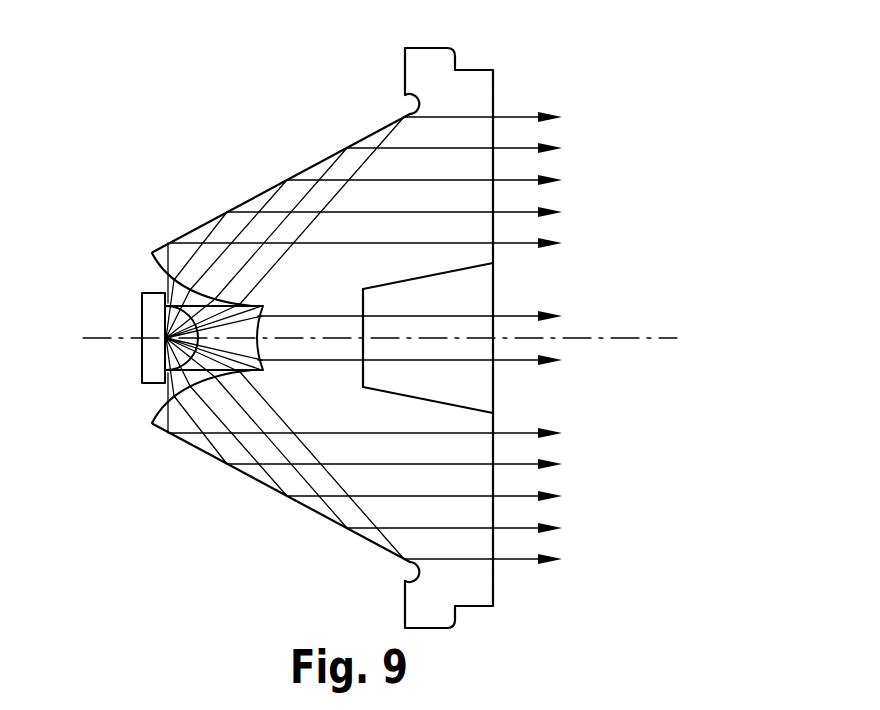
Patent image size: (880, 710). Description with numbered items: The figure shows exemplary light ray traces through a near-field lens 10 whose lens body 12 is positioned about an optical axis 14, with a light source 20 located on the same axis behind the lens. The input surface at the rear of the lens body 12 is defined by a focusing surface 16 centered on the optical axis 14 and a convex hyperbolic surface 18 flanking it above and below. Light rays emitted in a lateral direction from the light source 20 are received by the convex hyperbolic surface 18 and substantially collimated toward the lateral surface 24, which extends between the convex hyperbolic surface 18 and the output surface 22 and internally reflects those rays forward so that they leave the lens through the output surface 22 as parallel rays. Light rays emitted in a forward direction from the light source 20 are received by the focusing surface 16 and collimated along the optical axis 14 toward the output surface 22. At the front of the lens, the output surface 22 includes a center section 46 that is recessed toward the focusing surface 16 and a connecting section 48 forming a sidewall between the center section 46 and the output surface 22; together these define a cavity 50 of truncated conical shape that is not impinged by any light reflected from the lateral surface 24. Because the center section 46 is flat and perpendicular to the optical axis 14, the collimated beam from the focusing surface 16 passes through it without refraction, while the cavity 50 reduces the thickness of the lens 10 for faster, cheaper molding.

The near-field lens 10 is at (409, 315).
The lens body 12 is at (336, 403).
The optical axis 14 is at (660, 336).
The focusing surface 16 is at (260, 328).
The convex hyperbolic surface 18 is at (150, 237).
The light source 20 is at (142, 322).
The output surface 22 is at (495, 90).
The lateral surface 24 is at (313, 166).
The center section 46 is at (365, 302).
The connecting section 48 is at (430, 402).
The cavity 50 is at (427, 378).